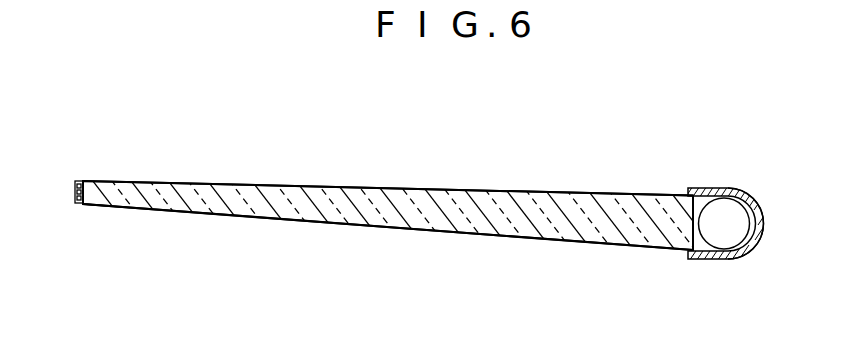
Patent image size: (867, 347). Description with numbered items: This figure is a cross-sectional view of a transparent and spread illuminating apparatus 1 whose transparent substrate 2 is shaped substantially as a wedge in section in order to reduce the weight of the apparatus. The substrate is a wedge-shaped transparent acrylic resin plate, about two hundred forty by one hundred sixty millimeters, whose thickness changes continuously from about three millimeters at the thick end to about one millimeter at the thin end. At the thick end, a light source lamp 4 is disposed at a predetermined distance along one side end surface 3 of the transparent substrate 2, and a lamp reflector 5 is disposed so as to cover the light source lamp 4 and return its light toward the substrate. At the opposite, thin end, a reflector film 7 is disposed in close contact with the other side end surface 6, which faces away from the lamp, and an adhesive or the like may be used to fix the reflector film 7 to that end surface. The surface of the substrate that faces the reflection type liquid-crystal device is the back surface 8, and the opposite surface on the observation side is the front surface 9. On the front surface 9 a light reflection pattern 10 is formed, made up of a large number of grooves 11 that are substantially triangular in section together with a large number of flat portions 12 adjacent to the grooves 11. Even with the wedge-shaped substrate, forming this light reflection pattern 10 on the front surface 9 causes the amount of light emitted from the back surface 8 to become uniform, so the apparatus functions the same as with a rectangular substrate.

The transparent and spread illuminating apparatus 1 is at (590, 188).
The transparent substrate 2 is at (404, 191).
The one side end surface 3 is at (716, 189).
The light source lamp 4 is at (730, 233).
The lamp reflector 5 is at (752, 198).
The other side end surface 6 is at (74, 185).
The reflector film 7 is at (77, 201).
The back surface 8 is at (228, 185).
The front surface 9 is at (95, 206).
The light reflection pattern 10 is at (332, 228).
The grooves 11 is at (540, 240).
The flat portions 12 is at (430, 233).